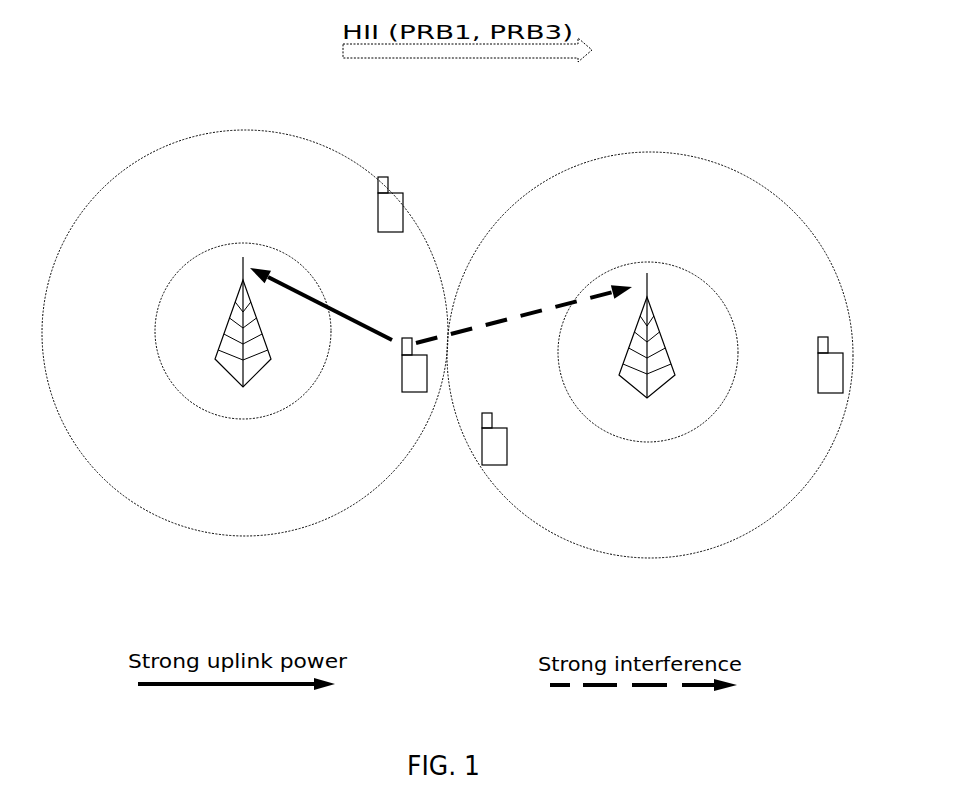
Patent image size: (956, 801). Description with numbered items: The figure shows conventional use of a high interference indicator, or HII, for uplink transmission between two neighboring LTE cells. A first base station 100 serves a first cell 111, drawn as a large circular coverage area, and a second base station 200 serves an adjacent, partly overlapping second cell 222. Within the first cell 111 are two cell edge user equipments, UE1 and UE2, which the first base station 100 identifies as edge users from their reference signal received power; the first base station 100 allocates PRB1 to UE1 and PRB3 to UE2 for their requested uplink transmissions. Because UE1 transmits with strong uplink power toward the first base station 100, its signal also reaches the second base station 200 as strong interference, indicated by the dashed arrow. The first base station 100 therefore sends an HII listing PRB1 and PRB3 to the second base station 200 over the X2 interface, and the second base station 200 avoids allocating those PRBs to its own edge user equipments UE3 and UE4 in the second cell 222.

The first base station 100 is at (269, 414).
The second base station 200 is at (665, 428).
The first cell 111 is at (264, 601).
The second cell 222 is at (669, 599).
The element UE1 is at (405, 390).
The element UE2 is at (397, 234).
The element UE3 is at (503, 455).
The element UE4 is at (829, 380).